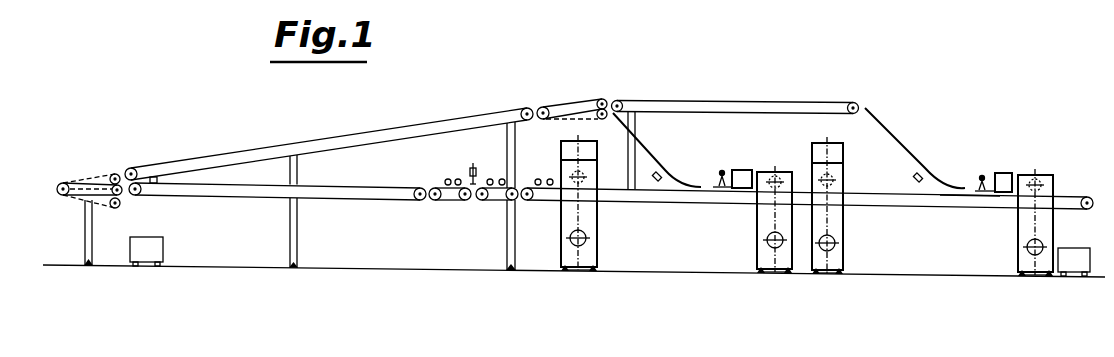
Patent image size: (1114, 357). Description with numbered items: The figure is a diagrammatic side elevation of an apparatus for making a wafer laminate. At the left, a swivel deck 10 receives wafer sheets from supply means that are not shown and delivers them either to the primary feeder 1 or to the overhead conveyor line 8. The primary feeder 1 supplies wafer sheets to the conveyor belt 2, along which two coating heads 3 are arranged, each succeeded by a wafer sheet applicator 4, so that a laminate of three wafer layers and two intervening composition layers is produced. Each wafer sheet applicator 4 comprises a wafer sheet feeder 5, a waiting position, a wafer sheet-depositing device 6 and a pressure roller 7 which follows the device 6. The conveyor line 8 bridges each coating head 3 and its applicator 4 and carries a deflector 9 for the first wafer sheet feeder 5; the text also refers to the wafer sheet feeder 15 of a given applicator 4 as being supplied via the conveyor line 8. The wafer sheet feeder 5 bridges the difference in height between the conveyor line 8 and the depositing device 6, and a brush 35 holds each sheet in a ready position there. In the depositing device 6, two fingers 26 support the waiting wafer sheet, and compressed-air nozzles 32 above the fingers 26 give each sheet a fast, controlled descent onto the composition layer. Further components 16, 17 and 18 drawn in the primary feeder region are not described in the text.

The primary feeder 1 is at (340, 240).
The conveyor belt 2 is at (713, 201).
The coating head 3 is at (570, 282).
The wafer sheet applicator 4 is at (750, 153).
The wafer sheet feeder 5 is at (664, 171).
The wafer sheet-depositing device 6 is at (737, 170).
The pressure roller 7 is at (789, 172).
The conveyor line 8 is at (339, 141).
The deflector 9 is at (571, 103).
The swivel deck 10 is at (90, 189).
The wafer sheet feeder 15 is at (380, 197).
The conveyor section 16 is at (452, 200).
The conveyor section 17 is at (495, 200).
The sensor device 18 is at (469, 172).
The finger 26 is at (988, 194).
The compressed-air nozzle 32 is at (982, 175).
The brush 35 is at (915, 180).